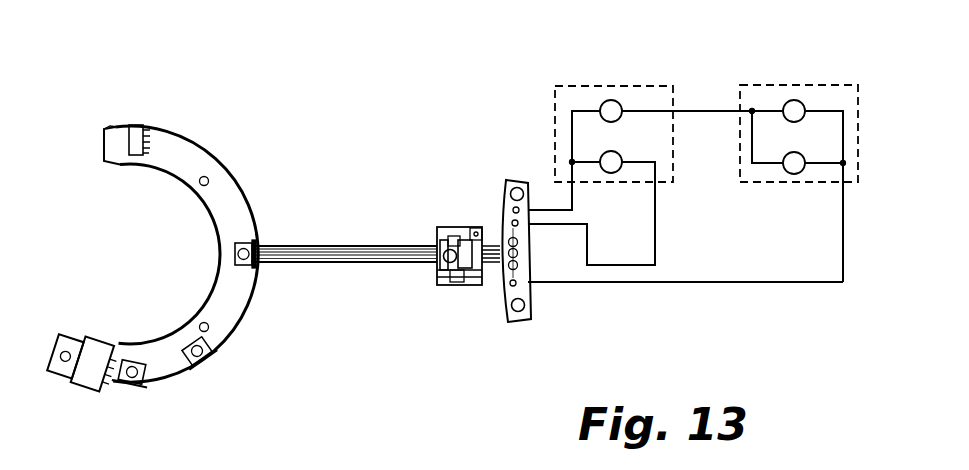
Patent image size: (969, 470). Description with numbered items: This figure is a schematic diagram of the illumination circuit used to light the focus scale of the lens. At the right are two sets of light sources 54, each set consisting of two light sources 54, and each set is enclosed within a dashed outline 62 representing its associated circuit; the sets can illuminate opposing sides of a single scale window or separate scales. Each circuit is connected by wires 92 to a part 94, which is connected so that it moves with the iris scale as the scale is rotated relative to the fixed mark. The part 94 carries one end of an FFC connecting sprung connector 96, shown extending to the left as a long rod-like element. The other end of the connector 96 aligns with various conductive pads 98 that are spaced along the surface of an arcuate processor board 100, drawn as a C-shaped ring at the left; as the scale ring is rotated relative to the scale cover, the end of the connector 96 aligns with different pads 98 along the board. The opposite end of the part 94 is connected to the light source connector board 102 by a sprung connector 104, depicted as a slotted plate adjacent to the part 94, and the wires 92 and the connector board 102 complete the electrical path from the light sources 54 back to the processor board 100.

The light source 54 is at (612, 105).
The sensor housing 62 is at (556, 87).
The wires 92 is at (543, 203).
The part 94 is at (435, 276).
The FFC connecting sprung connector 96 is at (312, 245).
The conductive pads 98 is at (235, 256).
The arcuate processor board 100 is at (178, 147).
The light source connector board 102 is at (749, 283).
The sprung connector 104 is at (510, 302).